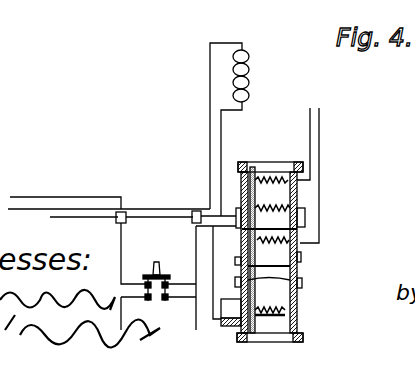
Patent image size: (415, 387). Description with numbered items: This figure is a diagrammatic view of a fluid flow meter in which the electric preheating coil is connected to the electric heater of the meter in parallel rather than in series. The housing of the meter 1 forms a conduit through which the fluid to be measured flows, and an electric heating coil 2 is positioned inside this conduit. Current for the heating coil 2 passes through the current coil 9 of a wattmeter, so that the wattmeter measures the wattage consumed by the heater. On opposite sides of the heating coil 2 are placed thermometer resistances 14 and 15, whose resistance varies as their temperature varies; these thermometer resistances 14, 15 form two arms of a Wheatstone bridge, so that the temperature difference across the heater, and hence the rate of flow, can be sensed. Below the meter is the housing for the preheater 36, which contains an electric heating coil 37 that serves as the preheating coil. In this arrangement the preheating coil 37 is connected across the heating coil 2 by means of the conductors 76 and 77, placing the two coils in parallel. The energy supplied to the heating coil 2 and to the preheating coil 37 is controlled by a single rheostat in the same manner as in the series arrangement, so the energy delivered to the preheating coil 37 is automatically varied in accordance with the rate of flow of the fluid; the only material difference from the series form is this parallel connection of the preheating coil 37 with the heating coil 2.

The housing of the meter 1 is at (297, 201).
The electric heating coil 2 is at (268, 203).
The current coil of the wattmeter 9 is at (256, 68).
The thermometer resistance 14 is at (300, 228).
The thermometer resistance 15 is at (268, 178).
The housing for the preheater 36 is at (298, 322).
The preheating coil 37 is at (280, 303).
The conductor 76 is at (225, 286).
The conductor 77 is at (204, 247).